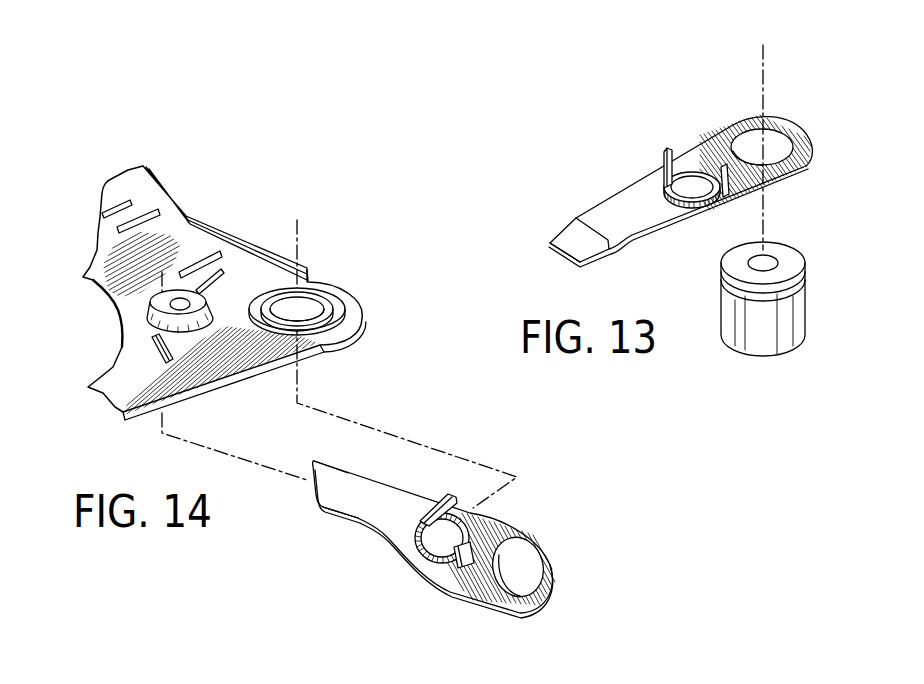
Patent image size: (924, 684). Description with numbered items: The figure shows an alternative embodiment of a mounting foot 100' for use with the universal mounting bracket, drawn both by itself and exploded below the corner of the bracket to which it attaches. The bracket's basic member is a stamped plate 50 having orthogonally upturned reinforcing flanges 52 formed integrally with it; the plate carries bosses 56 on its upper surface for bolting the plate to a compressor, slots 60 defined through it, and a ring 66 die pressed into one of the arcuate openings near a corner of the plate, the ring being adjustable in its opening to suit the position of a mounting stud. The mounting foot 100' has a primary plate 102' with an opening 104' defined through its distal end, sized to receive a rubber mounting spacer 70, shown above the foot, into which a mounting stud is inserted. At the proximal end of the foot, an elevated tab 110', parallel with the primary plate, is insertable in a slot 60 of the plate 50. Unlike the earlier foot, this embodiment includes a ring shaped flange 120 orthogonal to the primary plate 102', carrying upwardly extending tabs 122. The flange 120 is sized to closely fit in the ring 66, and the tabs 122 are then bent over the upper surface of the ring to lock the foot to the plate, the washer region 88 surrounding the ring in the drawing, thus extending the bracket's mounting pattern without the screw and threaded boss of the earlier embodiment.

In FIG. 14, the stamped plate 50 is at (108, 280).
In FIG. 14, the reinforcing flanges 52 is at (181, 206).
In FIG. 14, the bosses 56 is at (128, 295).
In FIG. 14, the slots 60 is at (140, 355).
In FIG. 14, the rings 66 is at (326, 300).
In FIG. 13, the rubber mounting spacer 70 is at (755, 343).
In FIG. 14, the washer flange 88 is at (345, 305).
In FIG. 13, the mounting foot 100' is at (680, 172).
In FIG. 14, the mounting foot 100' is at (454, 556).
In FIG. 13, the primary plate 102' is at (680, 191).
In FIG. 14, the primary plate 102' is at (434, 558).
In FIG. 13, the opening 104' is at (804, 121).
In FIG. 14, the opening 104' is at (566, 568).
In FIG. 13, the elevated tab 110' is at (546, 232).
In FIG. 14, the elevated tab 110' is at (308, 501).
In FIG. 13, the ring shaped flange 120 is at (704, 205).
In FIG. 14, the ring shaped flange 120 is at (440, 536).
In FIG. 13, the tabs 122 is at (667, 152).
In FIG. 14, the tabs 122 is at (448, 494).